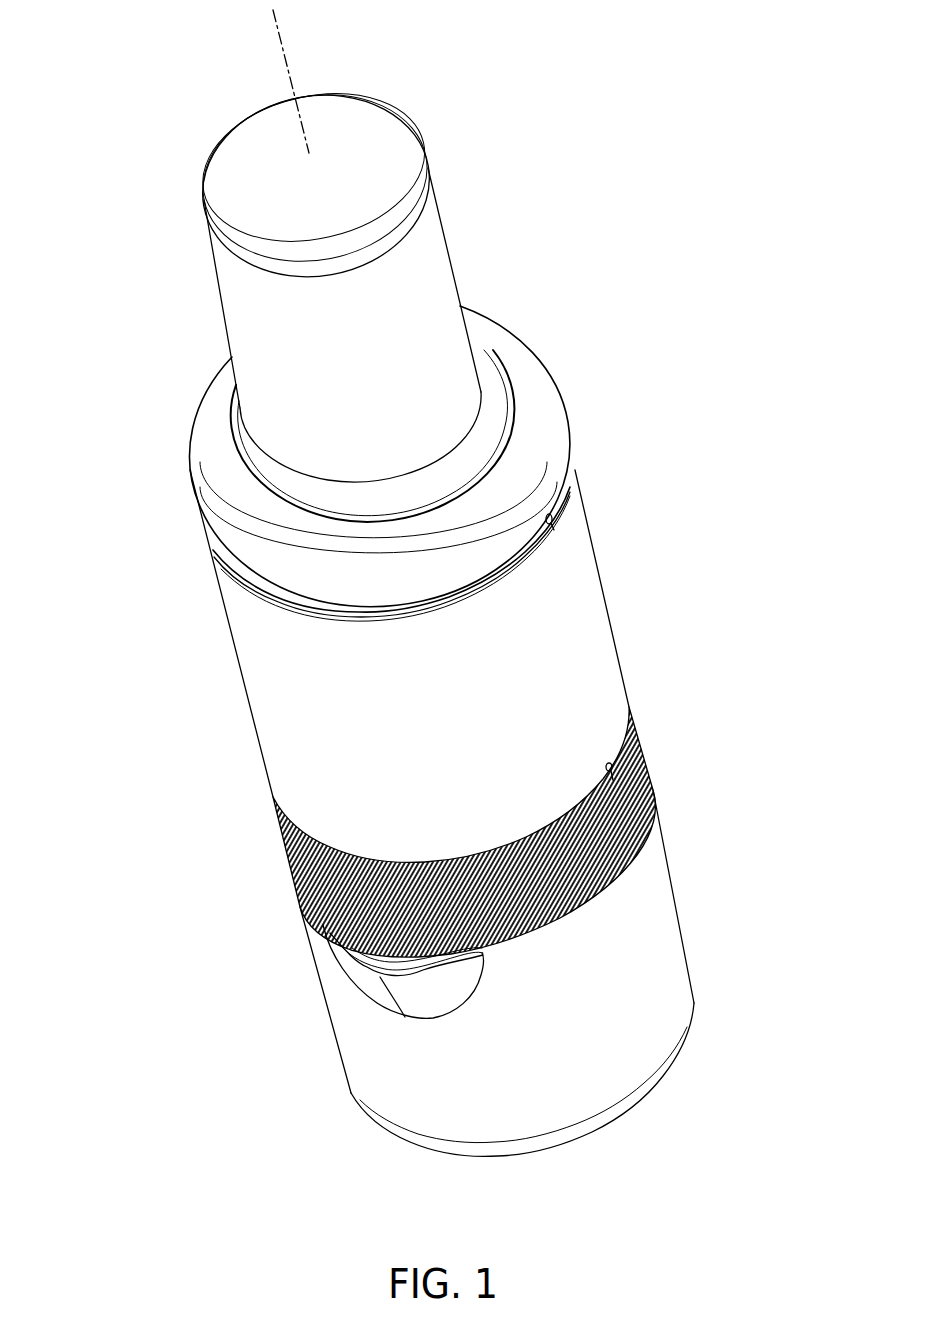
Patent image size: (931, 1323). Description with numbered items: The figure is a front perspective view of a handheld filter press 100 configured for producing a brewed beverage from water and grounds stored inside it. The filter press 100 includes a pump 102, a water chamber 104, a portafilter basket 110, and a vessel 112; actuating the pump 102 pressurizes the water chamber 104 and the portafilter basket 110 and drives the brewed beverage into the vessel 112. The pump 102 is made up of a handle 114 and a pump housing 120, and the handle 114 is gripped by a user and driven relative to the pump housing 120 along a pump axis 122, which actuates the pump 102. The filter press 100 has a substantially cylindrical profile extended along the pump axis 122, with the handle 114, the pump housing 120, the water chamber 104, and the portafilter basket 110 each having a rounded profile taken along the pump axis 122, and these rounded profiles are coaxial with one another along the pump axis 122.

The handheld filter press 100 is at (614, 106).
The pump 102 is at (430, 272).
The water chamber 104 is at (590, 627).
The portafilter basket 110 is at (648, 773).
The vessel 112 is at (650, 936).
The handle 114 is at (243, 187).
The pump housing 120 is at (247, 327).
The pump axis 122 is at (281, 57).